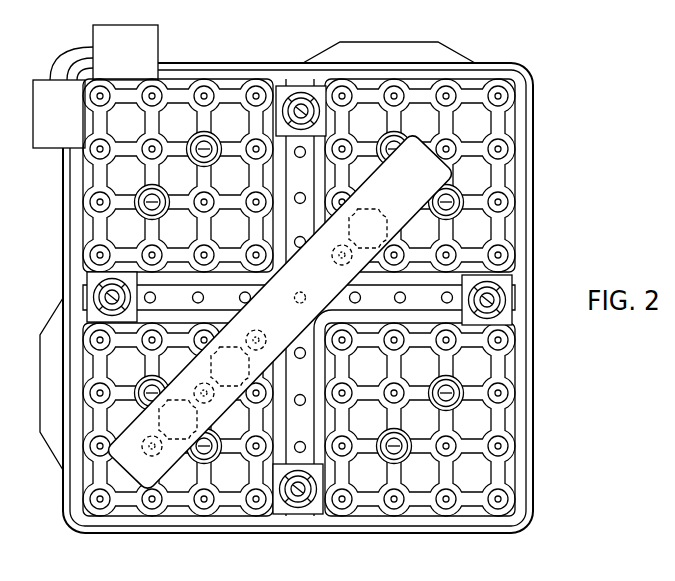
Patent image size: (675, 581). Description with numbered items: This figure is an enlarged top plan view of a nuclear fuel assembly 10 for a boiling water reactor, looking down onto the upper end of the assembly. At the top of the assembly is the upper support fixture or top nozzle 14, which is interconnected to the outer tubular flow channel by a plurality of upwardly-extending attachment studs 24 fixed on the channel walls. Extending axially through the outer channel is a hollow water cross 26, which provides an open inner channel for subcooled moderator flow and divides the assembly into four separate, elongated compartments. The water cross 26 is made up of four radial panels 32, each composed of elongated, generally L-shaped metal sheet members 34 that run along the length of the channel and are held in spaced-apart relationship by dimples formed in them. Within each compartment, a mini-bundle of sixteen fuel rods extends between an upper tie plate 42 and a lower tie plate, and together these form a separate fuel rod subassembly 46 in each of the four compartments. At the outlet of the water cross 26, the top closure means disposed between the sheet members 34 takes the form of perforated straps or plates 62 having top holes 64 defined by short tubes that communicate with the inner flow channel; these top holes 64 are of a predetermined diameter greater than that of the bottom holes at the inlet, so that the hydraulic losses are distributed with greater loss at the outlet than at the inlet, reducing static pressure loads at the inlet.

The nuclear fuel assembly 10 is at (551, 72).
The top nozzle 14 is at (534, 328).
The attachment studs 24 is at (307, 100).
The water cross 26 is at (158, 318).
The radial panels 32 is at (320, 152).
The sheet members 34 is at (327, 188).
The upper tie plate 42 is at (178, 82).
The fuel rod subassembly 46 is at (205, 78).
The top perforated plates 62 is at (318, 414).
The top holes 64 is at (256, 233).